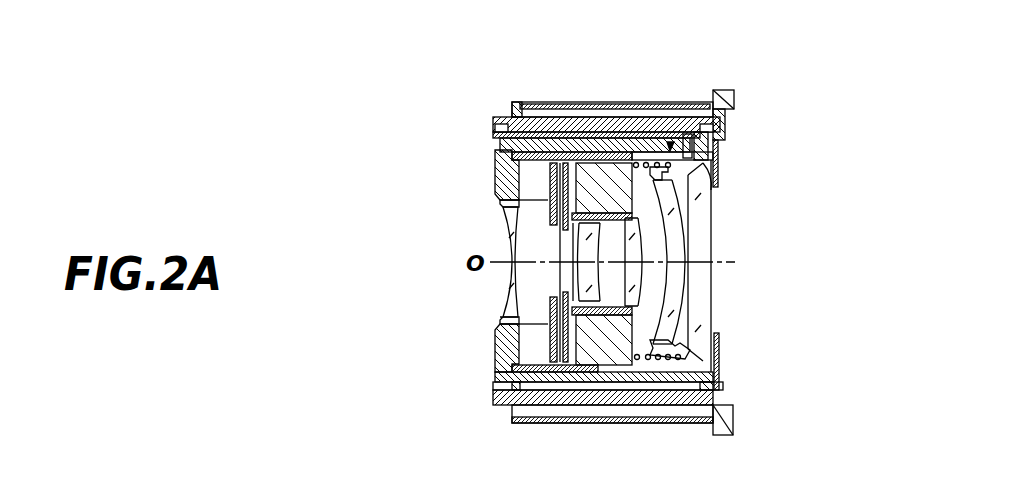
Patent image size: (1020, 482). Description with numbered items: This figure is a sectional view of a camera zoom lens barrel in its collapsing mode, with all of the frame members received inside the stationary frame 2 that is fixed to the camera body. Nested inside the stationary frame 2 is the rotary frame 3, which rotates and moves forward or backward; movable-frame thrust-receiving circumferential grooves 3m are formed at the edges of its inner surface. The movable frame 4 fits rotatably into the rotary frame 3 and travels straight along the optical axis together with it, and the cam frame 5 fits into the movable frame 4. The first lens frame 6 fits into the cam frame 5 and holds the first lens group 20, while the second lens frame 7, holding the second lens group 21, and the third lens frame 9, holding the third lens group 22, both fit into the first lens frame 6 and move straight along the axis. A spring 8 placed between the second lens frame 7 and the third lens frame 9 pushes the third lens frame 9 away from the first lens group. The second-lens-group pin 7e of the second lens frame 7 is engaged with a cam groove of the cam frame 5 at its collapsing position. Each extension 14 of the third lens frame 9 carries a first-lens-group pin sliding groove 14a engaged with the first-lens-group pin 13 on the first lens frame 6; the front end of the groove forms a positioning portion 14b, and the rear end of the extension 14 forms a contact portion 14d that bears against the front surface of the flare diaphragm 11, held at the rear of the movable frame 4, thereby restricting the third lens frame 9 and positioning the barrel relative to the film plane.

The stationary frame 2 is at (518, 102).
The rotary frame 3 is at (497, 118).
The movable-frame thrust-receiving circumferential grooves 3m is at (498, 124).
The movable frame 4 is at (497, 134).
The cam frame 5 is at (497, 163).
The first lens frame 6 is at (507, 175).
The second lens frame 7 is at (580, 342).
The second-lens-group pin 7e is at (688, 380).
The spring 8 is at (645, 360).
The third lens frame 9 is at (700, 334).
The flare diaphragm 11 is at (722, 182).
The first-lens-group pin 13 is at (686, 134).
The extension 14 is at (671, 142).
The first-lens-group pin sliding groove 14a is at (668, 140).
The positioning portion 14b is at (590, 152).
The contact portion 14d is at (712, 197).
The first lens group 20 is at (492, 302).
The second lens group 21 is at (652, 250).
The third lens group 22 is at (714, 281).